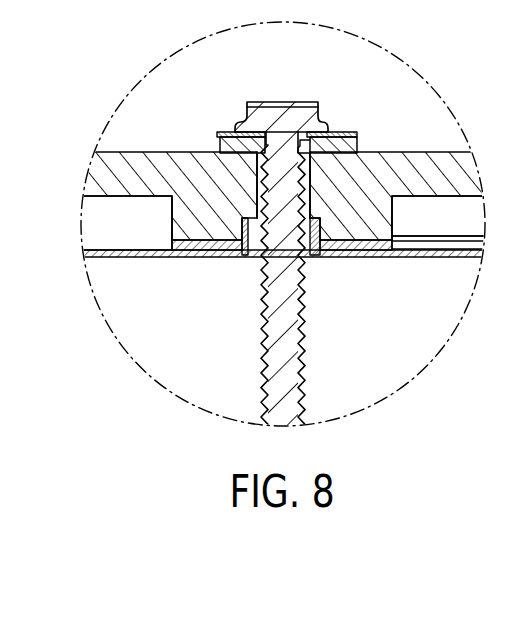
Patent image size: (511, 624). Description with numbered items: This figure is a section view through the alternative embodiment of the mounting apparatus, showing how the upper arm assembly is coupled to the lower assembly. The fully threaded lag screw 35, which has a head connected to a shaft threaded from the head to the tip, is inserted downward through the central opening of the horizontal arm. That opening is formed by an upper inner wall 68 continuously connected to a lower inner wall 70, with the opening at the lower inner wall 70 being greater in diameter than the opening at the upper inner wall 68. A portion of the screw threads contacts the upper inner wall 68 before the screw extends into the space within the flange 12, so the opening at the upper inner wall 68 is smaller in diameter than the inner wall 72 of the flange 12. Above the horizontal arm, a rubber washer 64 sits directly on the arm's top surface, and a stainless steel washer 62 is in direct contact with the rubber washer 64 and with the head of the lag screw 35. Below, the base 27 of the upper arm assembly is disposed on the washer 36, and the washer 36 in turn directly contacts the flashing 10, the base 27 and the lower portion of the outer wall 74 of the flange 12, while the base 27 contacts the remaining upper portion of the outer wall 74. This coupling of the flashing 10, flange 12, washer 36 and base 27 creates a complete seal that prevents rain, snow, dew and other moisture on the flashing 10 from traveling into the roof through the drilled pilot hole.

The flashing 10 is at (152, 250).
The flange 12 is at (243, 256).
The base 27 is at (190, 213).
The fully threaded lag screw 35 is at (282, 123).
The washer 36 is at (368, 247).
The stainless steel washer 62 is at (340, 133).
The rubber washer 64 is at (348, 148).
The upper inner wall 68 is at (257, 184).
The lower inner wall 70 is at (242, 221).
The inner wall 72 is at (306, 237).
The outer wall 74 is at (320, 233).